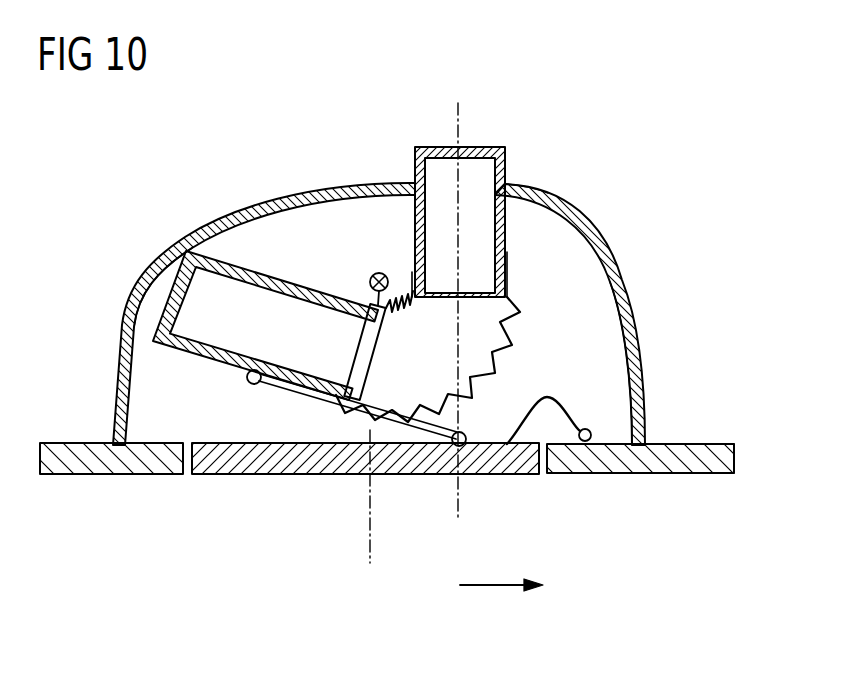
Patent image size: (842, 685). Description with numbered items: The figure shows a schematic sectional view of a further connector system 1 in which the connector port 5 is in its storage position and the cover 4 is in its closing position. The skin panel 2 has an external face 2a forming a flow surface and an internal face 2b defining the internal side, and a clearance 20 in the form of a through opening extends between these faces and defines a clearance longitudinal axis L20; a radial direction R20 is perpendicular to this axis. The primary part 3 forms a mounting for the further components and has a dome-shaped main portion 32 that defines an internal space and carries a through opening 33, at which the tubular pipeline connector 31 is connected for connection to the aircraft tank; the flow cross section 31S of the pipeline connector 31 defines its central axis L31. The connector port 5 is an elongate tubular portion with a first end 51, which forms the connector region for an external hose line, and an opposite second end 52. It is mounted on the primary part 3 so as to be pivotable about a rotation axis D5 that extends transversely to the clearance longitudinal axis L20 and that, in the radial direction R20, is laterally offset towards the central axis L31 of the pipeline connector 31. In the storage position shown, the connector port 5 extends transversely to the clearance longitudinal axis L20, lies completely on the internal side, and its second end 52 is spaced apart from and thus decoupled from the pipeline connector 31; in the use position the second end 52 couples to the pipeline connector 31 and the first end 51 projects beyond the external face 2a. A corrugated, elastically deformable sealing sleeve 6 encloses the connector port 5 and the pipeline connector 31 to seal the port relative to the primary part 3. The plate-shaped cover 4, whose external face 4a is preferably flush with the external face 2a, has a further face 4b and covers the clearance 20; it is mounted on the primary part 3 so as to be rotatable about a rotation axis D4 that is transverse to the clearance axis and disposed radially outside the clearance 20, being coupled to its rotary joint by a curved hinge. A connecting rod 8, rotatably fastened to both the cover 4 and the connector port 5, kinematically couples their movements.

The connector system 1 is at (204, 160).
The skin panel 2 is at (657, 465).
The external face 2a is at (695, 474).
The internal face 2b is at (688, 440).
The primary part 3 is at (198, 227).
The cover 4 is at (261, 466).
The external face of cover 4a is at (312, 477).
The upper surface of carrier plate 4b is at (243, 440).
The connector port 5 is at (243, 266).
The sealing sleeve 6 is at (511, 332).
The connecting rod 8 is at (284, 386).
The clearance 20 is at (191, 476).
The pipeline connector 31 is at (507, 227).
The flow cross section 31S is at (492, 263).
The main portion 32 is at (624, 288).
The through opening 33 is at (507, 180).
The first end 51 is at (160, 284).
The second end 52 is at (366, 346).
The rotation axis D4 is at (585, 442).
The rotation axis D5 is at (371, 275).
The clearance longitudinal axis L20 is at (372, 542).
The central axis L31 is at (461, 118).
The radial direction R20 is at (497, 587).